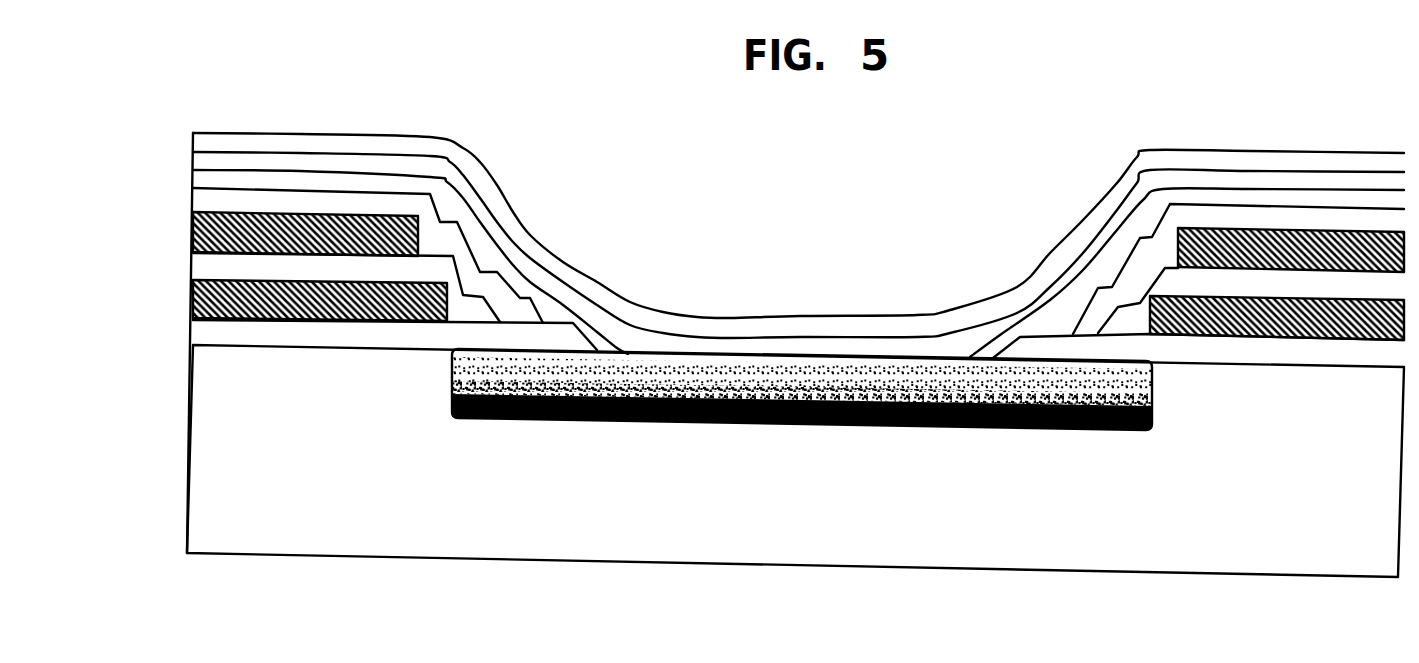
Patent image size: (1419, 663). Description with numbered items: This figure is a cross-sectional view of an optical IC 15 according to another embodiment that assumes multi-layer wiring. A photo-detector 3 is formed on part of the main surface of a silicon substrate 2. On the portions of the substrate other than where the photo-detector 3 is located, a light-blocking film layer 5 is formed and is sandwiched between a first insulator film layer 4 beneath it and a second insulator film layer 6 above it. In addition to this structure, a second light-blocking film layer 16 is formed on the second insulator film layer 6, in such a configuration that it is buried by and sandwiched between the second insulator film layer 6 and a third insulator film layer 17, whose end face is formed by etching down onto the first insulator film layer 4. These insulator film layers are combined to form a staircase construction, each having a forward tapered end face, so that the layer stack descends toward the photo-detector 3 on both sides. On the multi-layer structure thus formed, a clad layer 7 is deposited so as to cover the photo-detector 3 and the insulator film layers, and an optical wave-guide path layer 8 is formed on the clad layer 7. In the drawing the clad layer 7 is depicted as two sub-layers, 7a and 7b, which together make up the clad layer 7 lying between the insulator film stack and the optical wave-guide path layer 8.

The silicon substrate 2 is at (190, 456).
The photo-detector 3 is at (451, 395).
The first insulator film layer 4 is at (193, 321).
The light-blocking film layer 5 is at (193, 289).
The second insulator film layer 6 is at (193, 254).
The clad layer 7 is at (758, 228).
The first film layer 7a is at (203, 150).
The second film layer 7b is at (203, 150).
The optical wave-guide path layer 8 is at (362, 135).
The optical IC 15 is at (818, 144).
The second light-blocking film layer 16 is at (193, 218).
The third insulator film layer 17 is at (193, 191).